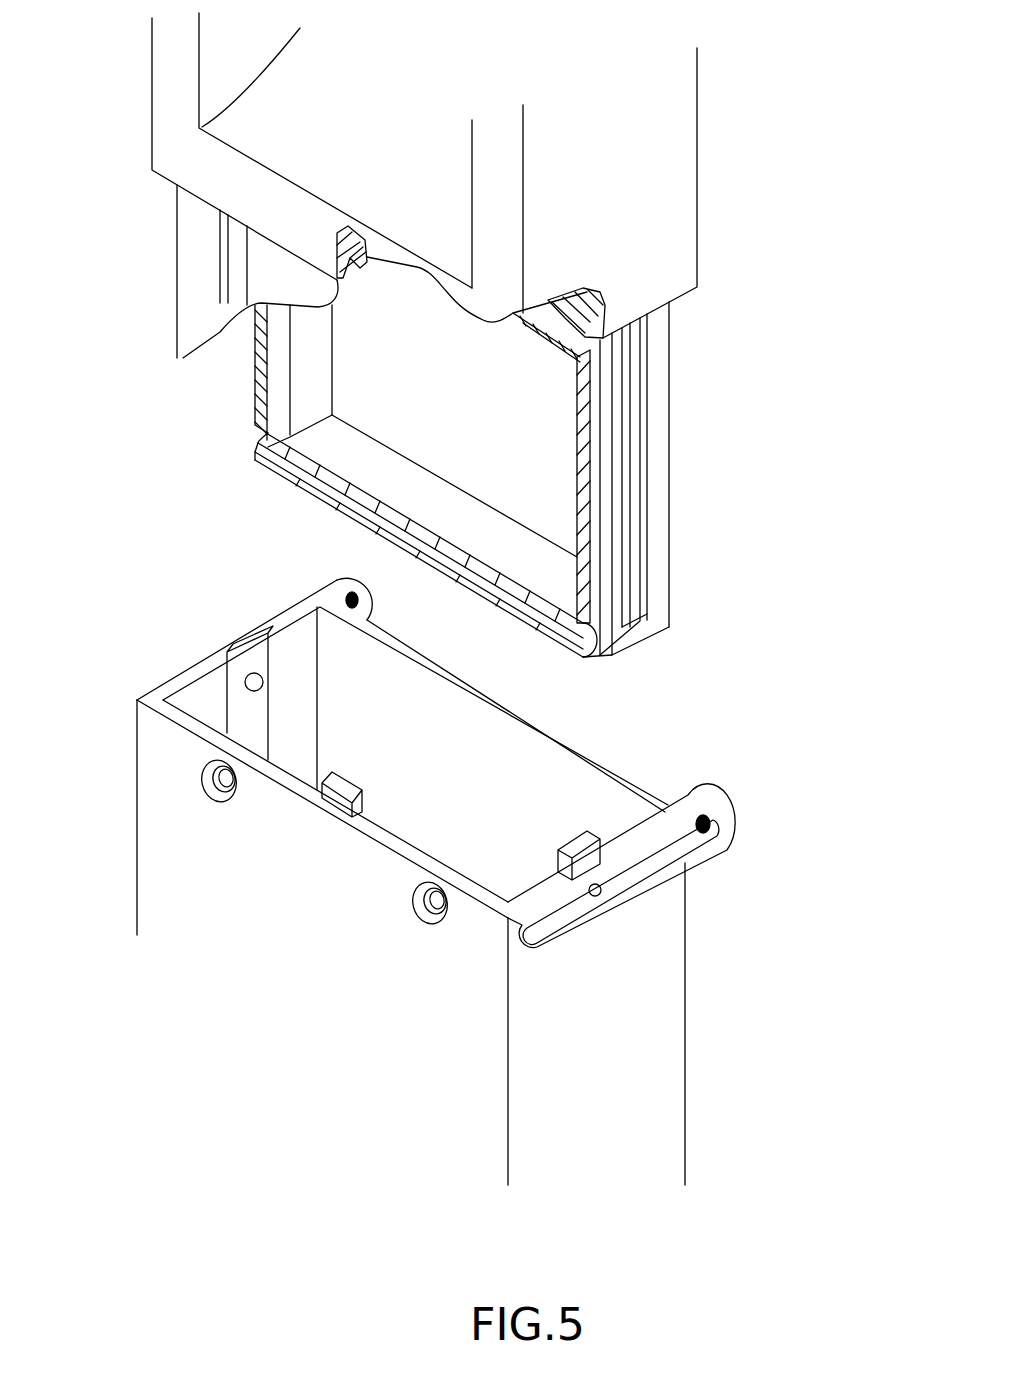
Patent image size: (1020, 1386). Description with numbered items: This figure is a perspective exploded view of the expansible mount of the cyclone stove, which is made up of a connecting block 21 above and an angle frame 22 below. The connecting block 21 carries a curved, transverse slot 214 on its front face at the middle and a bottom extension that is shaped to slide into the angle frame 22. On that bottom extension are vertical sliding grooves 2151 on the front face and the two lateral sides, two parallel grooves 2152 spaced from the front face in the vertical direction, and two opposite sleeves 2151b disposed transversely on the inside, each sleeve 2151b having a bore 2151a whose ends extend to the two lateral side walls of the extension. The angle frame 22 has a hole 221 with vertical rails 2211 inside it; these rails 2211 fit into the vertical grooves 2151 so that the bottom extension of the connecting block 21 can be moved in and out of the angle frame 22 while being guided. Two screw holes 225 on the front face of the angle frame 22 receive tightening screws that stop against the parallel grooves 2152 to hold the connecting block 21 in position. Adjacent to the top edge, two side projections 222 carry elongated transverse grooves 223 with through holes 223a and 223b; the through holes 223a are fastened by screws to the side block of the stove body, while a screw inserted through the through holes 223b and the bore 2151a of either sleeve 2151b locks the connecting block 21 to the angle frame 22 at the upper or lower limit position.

The connecting block 21 is at (668, 208).
The curved transverse slot 214 is at (263, 107).
The parallel grooves 2152 is at (235, 255).
The vertical sliding grooves 2151 is at (595, 577).
The bore 2151a is at (585, 340).
The sleeves 2151b is at (537, 337).
The angle frame 22 is at (152, 747).
The hole 221 is at (545, 765).
The vertical rails 2211 is at (247, 640).
The side projections 222 is at (703, 793).
The elongated transverse grooves 223 is at (540, 920).
The through holes 223a is at (763, 828).
The through holes 223b is at (262, 672).
The screw holes 225 is at (208, 786).